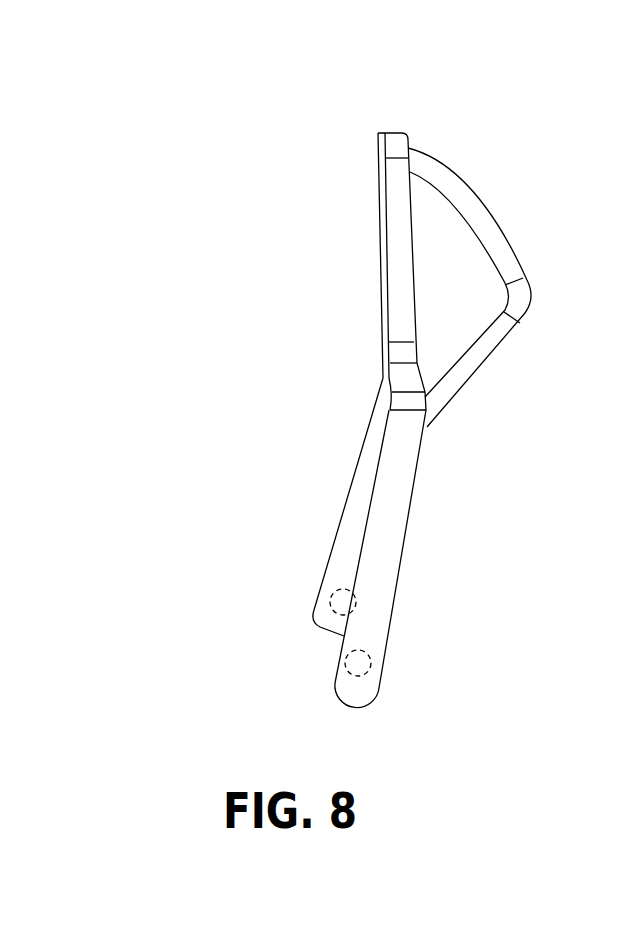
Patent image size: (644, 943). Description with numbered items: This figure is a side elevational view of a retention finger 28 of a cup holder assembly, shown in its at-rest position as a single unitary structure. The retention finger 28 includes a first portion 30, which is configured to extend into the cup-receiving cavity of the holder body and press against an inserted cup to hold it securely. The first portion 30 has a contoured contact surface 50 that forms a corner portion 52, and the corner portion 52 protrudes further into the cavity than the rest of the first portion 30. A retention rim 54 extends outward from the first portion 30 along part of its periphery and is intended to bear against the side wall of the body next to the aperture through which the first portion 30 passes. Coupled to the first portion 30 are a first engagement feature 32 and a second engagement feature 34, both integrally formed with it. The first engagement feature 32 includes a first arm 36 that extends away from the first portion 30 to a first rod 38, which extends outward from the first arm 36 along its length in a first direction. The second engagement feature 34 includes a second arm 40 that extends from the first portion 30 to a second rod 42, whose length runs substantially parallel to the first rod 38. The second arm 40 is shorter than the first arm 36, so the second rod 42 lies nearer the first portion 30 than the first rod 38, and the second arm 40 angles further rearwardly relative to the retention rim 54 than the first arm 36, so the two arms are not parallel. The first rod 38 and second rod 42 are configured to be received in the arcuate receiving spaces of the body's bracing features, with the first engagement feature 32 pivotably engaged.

The retention finger 28 is at (452, 142).
The first portion 30 is at (458, 260).
The first engagement feature 32 is at (399, 588).
The second engagement feature 34 is at (338, 542).
The first arm 36 is at (395, 522).
The first rod 38 is at (383, 666).
The second arm 40 is at (352, 522).
The second rod 42 is at (320, 598).
The contoured contact surface 50 is at (503, 243).
The corner portion 52 is at (520, 307).
The retention rim 54 is at (398, 198).